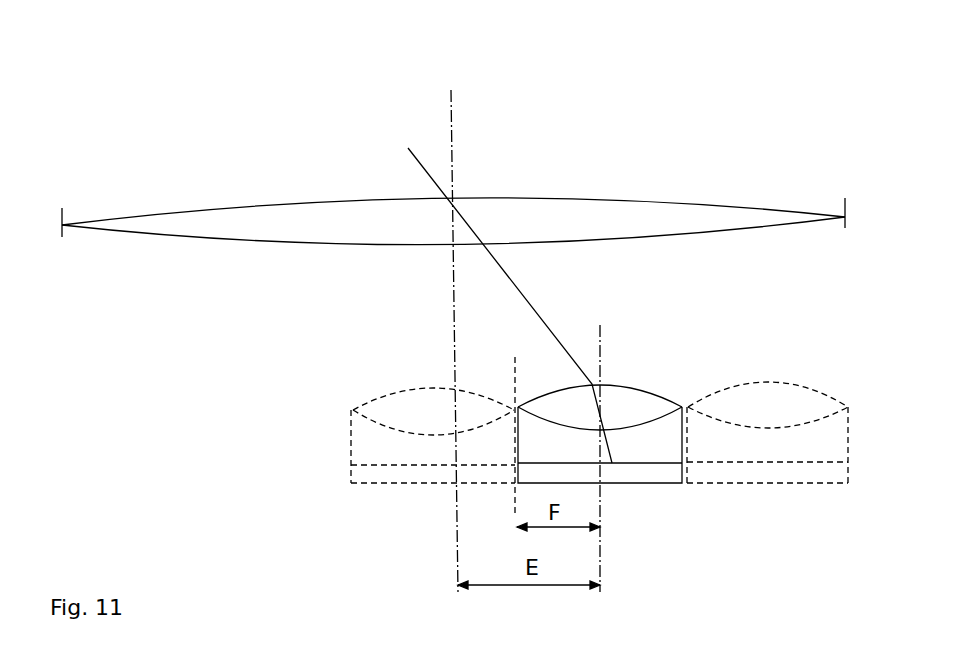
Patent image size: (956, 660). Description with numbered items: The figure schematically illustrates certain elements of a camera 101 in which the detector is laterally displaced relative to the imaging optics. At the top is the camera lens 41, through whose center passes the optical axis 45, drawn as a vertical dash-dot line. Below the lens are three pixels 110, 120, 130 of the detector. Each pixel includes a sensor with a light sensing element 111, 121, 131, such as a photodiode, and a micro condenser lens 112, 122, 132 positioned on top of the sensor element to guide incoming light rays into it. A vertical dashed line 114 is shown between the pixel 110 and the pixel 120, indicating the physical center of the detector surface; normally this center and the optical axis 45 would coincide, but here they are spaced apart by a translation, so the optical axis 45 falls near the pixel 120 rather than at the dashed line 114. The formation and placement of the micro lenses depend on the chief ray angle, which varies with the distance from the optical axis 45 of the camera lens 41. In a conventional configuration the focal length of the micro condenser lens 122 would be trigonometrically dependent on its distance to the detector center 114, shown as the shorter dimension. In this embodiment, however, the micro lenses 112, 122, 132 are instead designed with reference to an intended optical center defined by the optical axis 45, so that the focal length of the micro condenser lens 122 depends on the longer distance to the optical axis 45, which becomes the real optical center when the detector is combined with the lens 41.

The camera lens 41 is at (542, 208).
The optical axis 45 is at (452, 122).
The camera 101 is at (119, 372).
The pixel 110 is at (401, 471).
The light sensing element 111 is at (383, 467).
The micro condenser lens 112 is at (365, 408).
The vertical dashed line 114 is at (513, 378).
The pixel 120 is at (624, 450).
The light sensing element 121 is at (628, 463).
The micro condenser lens 122 is at (682, 402).
The pixel 130 is at (785, 447).
The light sensing element 131 is at (825, 460).
The micro condenser lens 132 is at (762, 382).